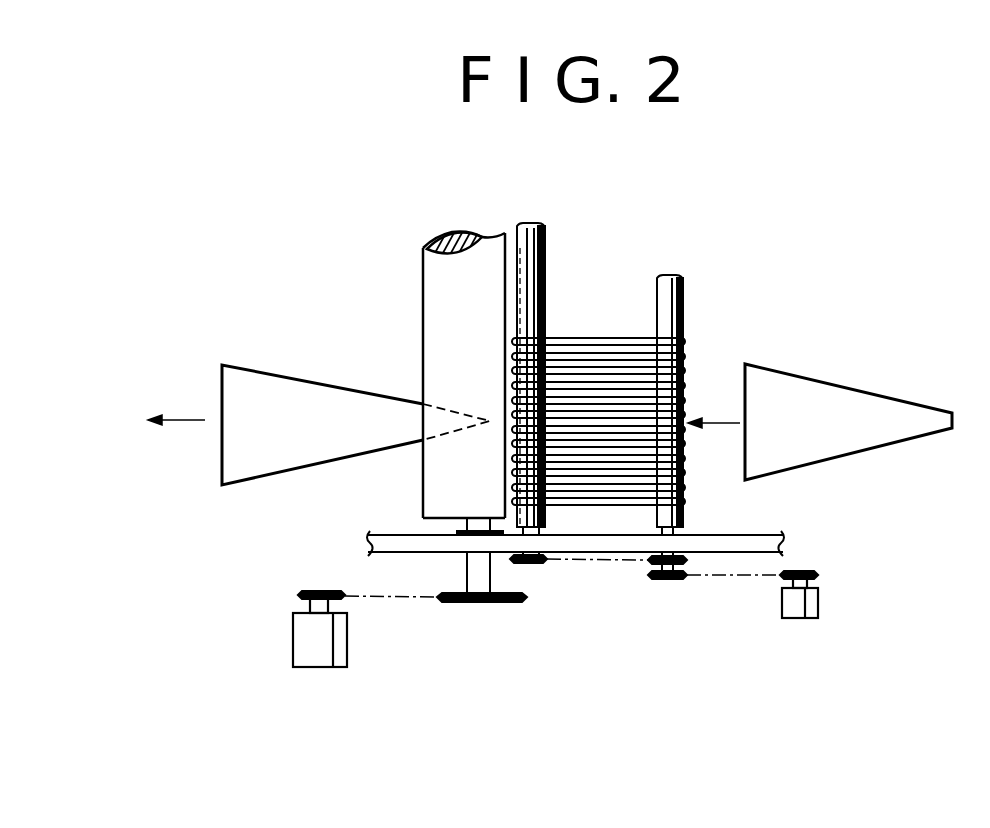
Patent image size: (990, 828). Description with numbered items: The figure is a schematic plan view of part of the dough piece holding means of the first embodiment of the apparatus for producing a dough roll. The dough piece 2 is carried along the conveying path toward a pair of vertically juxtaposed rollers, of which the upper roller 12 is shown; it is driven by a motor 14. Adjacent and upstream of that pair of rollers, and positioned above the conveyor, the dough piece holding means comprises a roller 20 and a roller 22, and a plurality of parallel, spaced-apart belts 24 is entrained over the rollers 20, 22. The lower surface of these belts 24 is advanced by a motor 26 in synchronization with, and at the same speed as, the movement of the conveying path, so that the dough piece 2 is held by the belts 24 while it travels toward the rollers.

The dough piece 2 is at (330, 392).
The upper roller 12 is at (423, 272).
The motor 14 is at (347, 650).
The roller 20 is at (545, 240).
The roller 22 is at (683, 290).
The belts 24 is at (600, 338).
The motor 26 is at (782, 600).